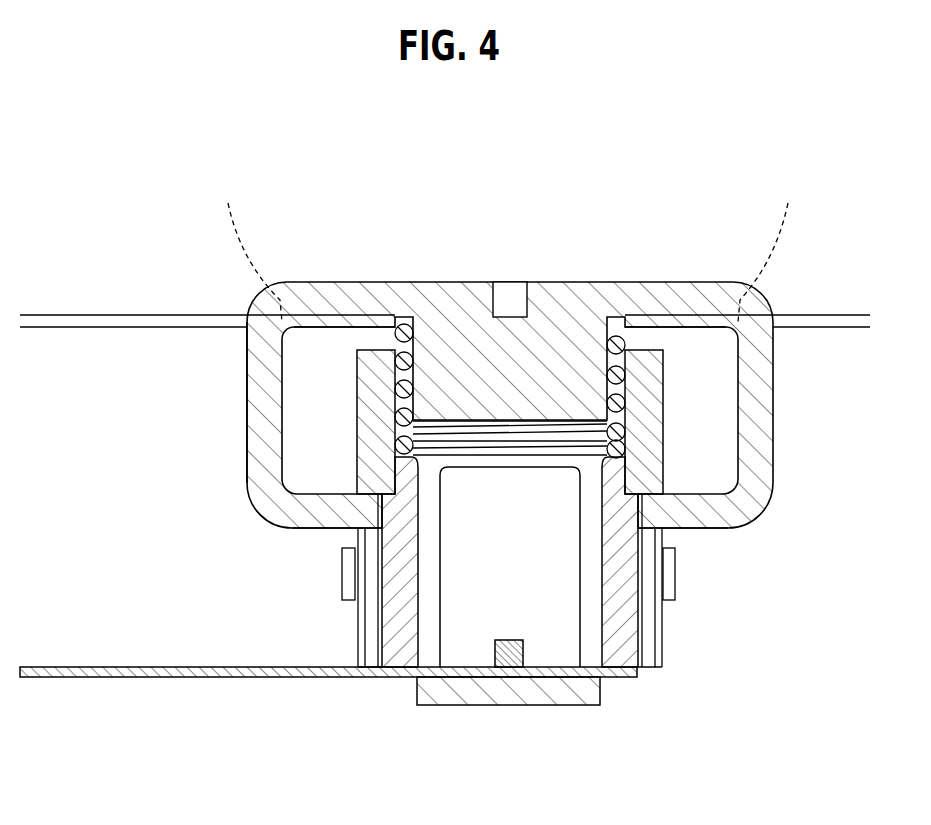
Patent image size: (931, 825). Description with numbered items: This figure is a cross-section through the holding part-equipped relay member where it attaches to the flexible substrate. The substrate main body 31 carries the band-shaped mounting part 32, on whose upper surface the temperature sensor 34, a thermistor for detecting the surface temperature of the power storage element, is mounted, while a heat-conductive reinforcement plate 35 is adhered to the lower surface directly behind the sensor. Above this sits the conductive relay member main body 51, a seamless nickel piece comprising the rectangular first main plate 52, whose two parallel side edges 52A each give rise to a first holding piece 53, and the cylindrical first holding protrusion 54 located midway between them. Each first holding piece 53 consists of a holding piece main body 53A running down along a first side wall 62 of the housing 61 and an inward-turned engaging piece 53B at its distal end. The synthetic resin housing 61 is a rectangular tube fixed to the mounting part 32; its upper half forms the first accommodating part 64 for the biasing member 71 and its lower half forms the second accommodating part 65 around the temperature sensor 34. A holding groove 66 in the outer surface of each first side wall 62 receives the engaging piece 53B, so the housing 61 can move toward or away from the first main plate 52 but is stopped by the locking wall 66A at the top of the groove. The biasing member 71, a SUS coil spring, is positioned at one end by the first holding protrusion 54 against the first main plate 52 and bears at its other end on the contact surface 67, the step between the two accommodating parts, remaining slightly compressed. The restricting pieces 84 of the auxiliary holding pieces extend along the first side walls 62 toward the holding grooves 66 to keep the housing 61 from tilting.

The substrate main body 31 is at (77, 315).
The mounting part 32 is at (163, 677).
The temperature sensor 34 is at (500, 638).
The reinforcement plate 35 is at (443, 693).
The relay member main body 51 is at (638, 253).
The first main plate 52 is at (349, 297).
The side edges 52A is at (510, 247).
The first holding pieces 53 is at (120, 438).
The holding piece main body 53A is at (257, 440).
The engaging piece 53B is at (300, 529).
The first holding protrusion 54 is at (533, 400).
The housing 61 is at (680, 431).
The first side walls 62 is at (655, 462).
The first accommodating part 64 is at (603, 388).
The second accommodating part 65 is at (602, 628).
The holding groove 66 is at (383, 625).
The locking wall 66A is at (370, 495).
The contact surface 67 is at (403, 445).
The biasing member 71 is at (603, 337).
The restricting pieces 84 is at (670, 575).